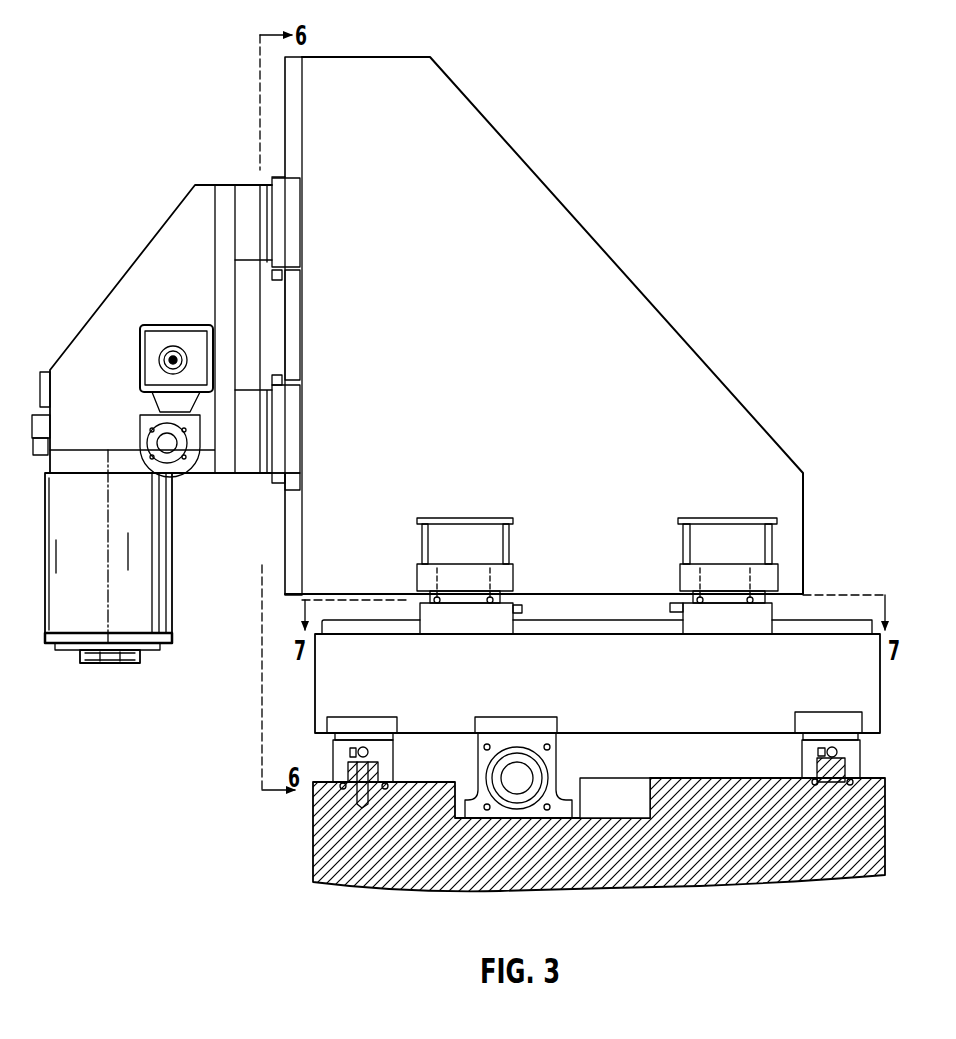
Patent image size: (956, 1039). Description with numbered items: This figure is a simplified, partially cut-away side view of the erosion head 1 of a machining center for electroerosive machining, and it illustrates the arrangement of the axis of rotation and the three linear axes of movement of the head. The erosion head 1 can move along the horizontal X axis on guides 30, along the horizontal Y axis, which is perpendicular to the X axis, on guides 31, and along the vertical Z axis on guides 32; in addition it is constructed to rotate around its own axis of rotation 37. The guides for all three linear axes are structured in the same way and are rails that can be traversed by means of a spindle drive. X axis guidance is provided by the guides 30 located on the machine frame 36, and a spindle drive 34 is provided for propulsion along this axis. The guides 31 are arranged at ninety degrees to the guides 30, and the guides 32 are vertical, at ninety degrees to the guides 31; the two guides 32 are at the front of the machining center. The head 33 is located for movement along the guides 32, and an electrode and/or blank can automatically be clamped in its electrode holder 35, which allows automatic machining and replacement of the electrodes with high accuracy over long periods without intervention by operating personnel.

The erosion head 1 is at (596, 236).
The guides 30 is at (338, 758).
The guides 31 is at (848, 622).
The guides 32 is at (290, 98).
The head 33 is at (130, 282).
The spindle drive 34 is at (525, 778).
The electrode holder 35 is at (98, 656).
The machine frame 36 is at (320, 844).
The axis of rotation 37 is at (108, 572).